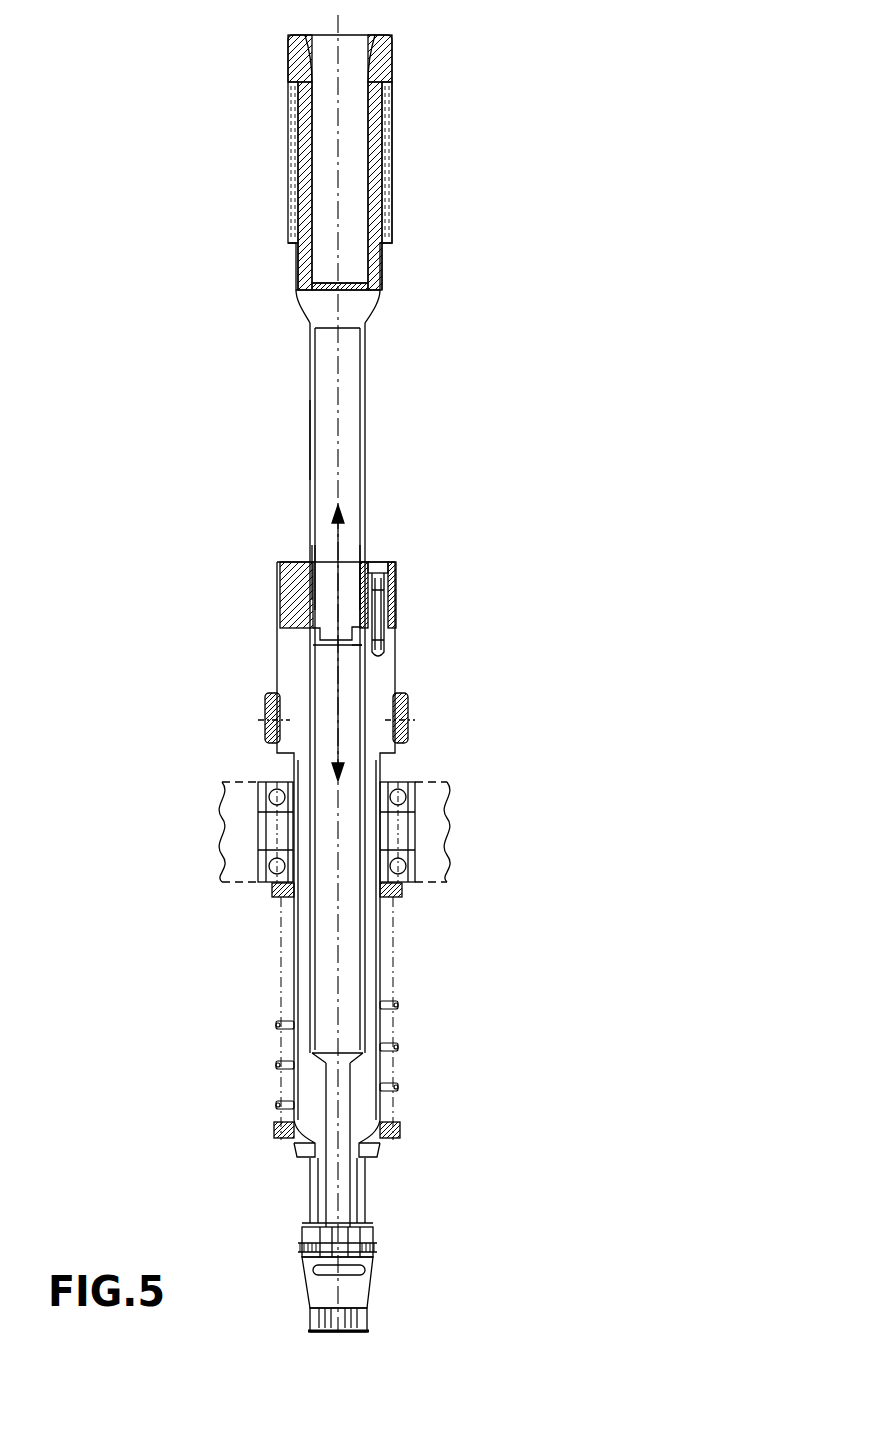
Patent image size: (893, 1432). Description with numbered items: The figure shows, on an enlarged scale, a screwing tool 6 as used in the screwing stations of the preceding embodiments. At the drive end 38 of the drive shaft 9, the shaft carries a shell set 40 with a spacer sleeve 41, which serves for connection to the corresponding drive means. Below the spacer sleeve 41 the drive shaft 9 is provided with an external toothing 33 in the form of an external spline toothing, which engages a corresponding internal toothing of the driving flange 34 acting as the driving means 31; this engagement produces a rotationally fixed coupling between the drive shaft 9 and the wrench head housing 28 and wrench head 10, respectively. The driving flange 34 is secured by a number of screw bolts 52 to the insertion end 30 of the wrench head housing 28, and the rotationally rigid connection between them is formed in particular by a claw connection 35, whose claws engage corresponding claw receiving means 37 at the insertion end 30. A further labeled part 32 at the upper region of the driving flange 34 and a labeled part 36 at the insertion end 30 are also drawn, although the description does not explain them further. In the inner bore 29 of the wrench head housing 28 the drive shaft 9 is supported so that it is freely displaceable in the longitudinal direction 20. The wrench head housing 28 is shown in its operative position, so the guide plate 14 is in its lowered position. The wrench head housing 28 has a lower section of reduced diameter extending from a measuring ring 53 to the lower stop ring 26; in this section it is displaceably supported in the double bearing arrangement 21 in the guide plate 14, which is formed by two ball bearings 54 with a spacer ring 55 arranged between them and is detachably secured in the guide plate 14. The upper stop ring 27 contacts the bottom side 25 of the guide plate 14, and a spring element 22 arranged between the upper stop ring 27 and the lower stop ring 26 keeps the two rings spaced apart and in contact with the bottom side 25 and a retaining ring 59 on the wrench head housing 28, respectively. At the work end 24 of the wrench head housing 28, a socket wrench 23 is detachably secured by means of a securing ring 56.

The drive end 38 is at (350, 56).
The shell set 40 is at (395, 126).
The spacer sleeve 41 is at (392, 184).
The drive shaft 9 is at (352, 407).
The external toothing 33 is at (310, 440).
The claw connection 35 is at (348, 612).
The shaft section 32 is at (318, 600).
The screwing tool 6 is at (512, 547).
The longitudinal direction 20 is at (337, 707).
The driving means 31 is at (230, 595).
The driving flange 34 is at (292, 600).
The screw bolts 52 is at (393, 590).
The insertion end 30 is at (387, 641).
The step piece 36 is at (323, 648).
The claw receiving means 37 is at (343, 653).
The inner bore 29 is at (353, 713).
The measuring ring 53 is at (410, 723).
The double bearing arrangement 21 is at (415, 768).
The guide plate 14 is at (442, 800).
The spacer ring 55 is at (260, 830).
The ball bearings 54 is at (415, 812).
The bottom side 25 is at (232, 886).
The upper stop ring 27 is at (273, 893).
The wrench head housing 28 is at (373, 907).
The wrench head 10 is at (432, 940).
The spring element 22 is at (278, 1062).
The lower stop ring 26 is at (275, 1129).
The retaining ring 59 is at (398, 1130).
The work end 24 is at (380, 1214).
The securing ring 56 is at (373, 1250).
The socket wrench 23 is at (367, 1288).